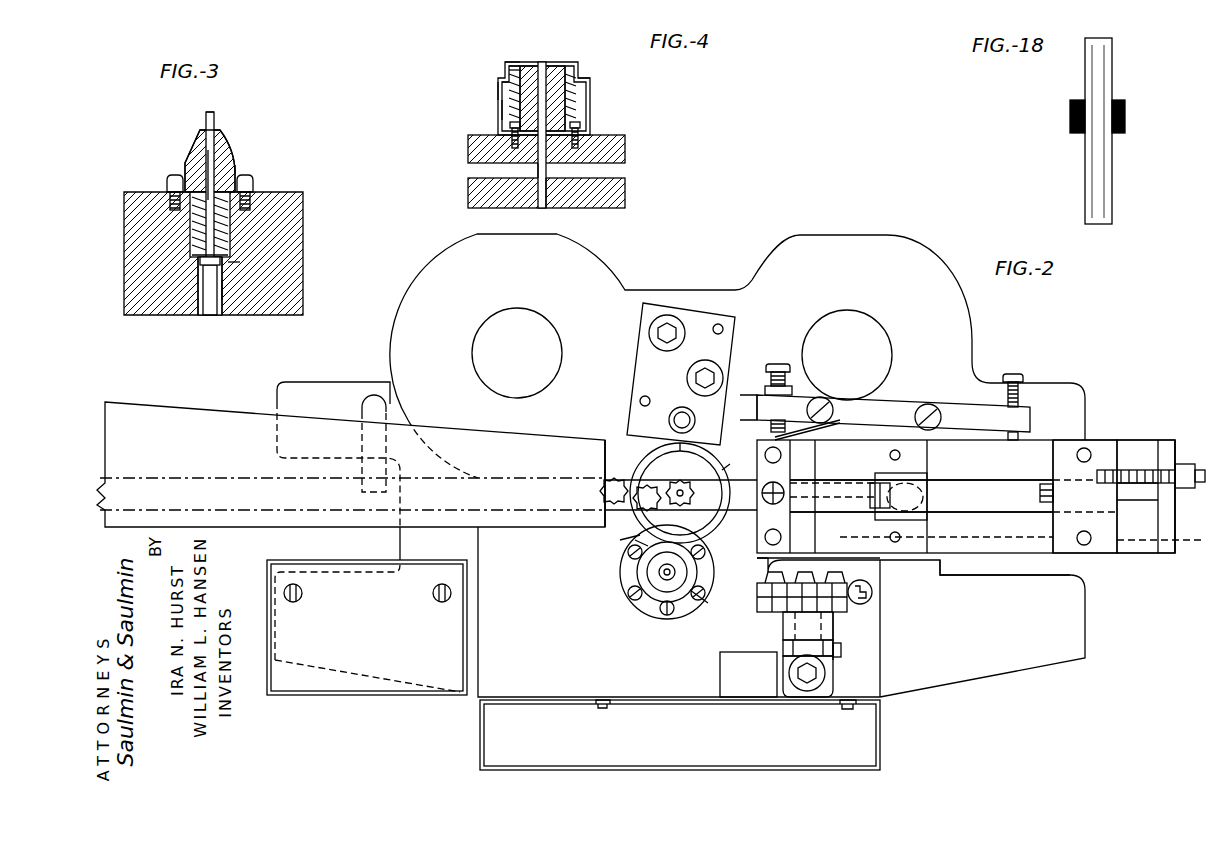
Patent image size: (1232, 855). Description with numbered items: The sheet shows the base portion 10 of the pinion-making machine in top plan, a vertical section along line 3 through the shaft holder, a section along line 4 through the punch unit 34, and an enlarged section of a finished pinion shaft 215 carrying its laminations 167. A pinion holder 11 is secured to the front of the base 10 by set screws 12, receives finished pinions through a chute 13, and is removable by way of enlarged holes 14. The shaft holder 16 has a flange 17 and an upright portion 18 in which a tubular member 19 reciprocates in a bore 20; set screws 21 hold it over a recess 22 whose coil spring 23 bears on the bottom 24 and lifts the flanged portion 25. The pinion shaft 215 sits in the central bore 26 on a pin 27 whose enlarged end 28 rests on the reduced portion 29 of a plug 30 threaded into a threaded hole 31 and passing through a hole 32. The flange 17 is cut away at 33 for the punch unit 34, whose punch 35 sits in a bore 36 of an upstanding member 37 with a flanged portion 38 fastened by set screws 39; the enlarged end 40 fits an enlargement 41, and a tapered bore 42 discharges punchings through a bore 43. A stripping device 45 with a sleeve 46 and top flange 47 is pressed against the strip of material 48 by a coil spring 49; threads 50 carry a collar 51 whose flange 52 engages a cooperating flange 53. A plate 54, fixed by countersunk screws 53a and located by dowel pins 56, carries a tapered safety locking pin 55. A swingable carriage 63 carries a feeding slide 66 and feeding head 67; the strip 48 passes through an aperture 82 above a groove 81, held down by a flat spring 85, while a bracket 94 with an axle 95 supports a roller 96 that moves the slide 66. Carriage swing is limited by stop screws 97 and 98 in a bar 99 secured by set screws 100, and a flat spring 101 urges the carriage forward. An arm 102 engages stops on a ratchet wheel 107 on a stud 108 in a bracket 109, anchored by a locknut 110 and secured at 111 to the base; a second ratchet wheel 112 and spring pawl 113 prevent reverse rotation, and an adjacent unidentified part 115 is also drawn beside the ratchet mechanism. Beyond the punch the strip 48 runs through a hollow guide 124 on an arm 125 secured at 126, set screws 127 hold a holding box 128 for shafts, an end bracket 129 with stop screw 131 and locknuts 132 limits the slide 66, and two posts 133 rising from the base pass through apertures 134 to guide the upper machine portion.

In FIG. 2, the section line 3 is at (622, 538).
In FIG. 2, the section line 4 is at (622, 452).
In FIG. 3, the base portion 10 is at (300, 214).
In FIG. 4, the base portion 10 is at (622, 190).
In FIG. 2, the base portion 10 is at (490, 680).
In FIG. 2, the pinion holder 11 is at (878, 730).
In FIG. 2, the set screws 12 is at (603, 709).
In FIG. 2, the chute 13 is at (722, 669).
In FIG. 2, the enlarged holes 14 is at (733, 562).
In FIG. 3, the shaft holder 16 is at (240, 150).
In FIG. 2, the shaft holder 16 is at (745, 478).
In FIG. 3, the flange 17 is at (253, 188).
In FIG. 2, the flange 17 is at (642, 608).
In FIG. 3, the upright portion 18 is at (194, 138).
In FIG. 2, the upright portion 18 is at (684, 600).
In FIG. 3, the tubular member 19 is at (214, 118).
In FIG. 2, the tubular member 19 is at (668, 572).
In FIG. 3, the bore 20 is at (232, 140).
In FIG. 2, the bore 20 is at (660, 576).
In FIG. 3, the set screws 21 is at (175, 176).
In FIG. 3, the recess 22 is at (200, 250).
In FIG. 3, the coil spring 23 is at (200, 255).
In FIG. 3, the bottom of recess 24 is at (192, 262).
In FIG. 3, the flanged portion 25 is at (236, 172).
In FIG. 3, the central bore 26 is at (207, 113).
In FIG. 3, the pin 27 is at (205, 165).
In FIG. 3, the enlarged lower end 28 is at (232, 262).
In FIG. 3, the reduced portion 29 is at (222, 268).
In FIG. 3, the plug 30 is at (212, 266).
In FIG. 3, the threaded hole 31 is at (216, 272).
In FIG. 3, the hole 32 is at (228, 270).
In FIG. 2, the cut-away portion 33 is at (652, 541).
In FIG. 4, the punch unit 34 is at (594, 101).
In FIG. 2, the punch unit 34 is at (656, 464).
In FIG. 4, the punch 35 is at (548, 70).
In FIG. 2, the punch 35 is at (680, 488).
In FIG. 4, the bore 36 is at (562, 76).
In FIG. 4, the upstanding member 37 is at (582, 80).
In FIG. 4, the flanged portion 38 is at (582, 130).
In FIG. 4, the set screws 39 is at (472, 150).
In FIG. 4, the enlarged lower end 40 is at (543, 135).
In FIG. 4, the bore enlargement 41 is at (519, 172).
In FIG. 4, the tapered bore 42 is at (532, 68).
In FIG. 2, the tapered bore 42 is at (686, 490).
In FIG. 4, the bore 43 is at (544, 205).
In FIG. 4, the stripping device 45 is at (510, 64).
In FIG. 4, the sleeve 46 is at (509, 74).
In FIG. 4, the top flanged portion 47 is at (514, 70).
In FIG. 2, the strip of material 48 is at (740, 475).
In FIG. 4, the coil spring 49 is at (512, 104).
In FIG. 4, the threaded portion 50 is at (508, 130).
In FIG. 4, the collar 51 is at (500, 110).
In FIG. 4, the flange 52 is at (503, 84).
In FIG. 4, the flange 53 is at (497, 88).
In FIG. 2, the countersunk screws 53a is at (672, 330).
In FIG. 2, the plate 54 is at (640, 362).
In FIG. 2, the tapered safety locking pin 55 is at (669, 421).
In FIG. 2, the dowel pins 56 is at (722, 326).
In FIG. 2, the swingable carriage 63 is at (1145, 550).
In FIG. 2, the feeding slide 66 is at (966, 496).
In FIG. 2, the feeding head 67 is at (1100, 447).
In FIG. 2, the groove 81 is at (1022, 490).
In FIG. 2, the aperture 82 is at (743, 412).
In FIG. 2, the flat spring 85 is at (968, 493).
In FIG. 2, the bracket 94 is at (905, 483).
In FIG. 2, the axle 95 is at (880, 481).
In FIG. 2, the roller 96 is at (870, 492).
In FIG. 2, the stop screw 97 is at (792, 382).
In FIG. 2, the stop screw 98 is at (1016, 382).
In FIG. 2, the bar 99 is at (903, 408).
In FIG. 2, the set screws 100 is at (826, 404).
In FIG. 2, the flat spring 101 is at (820, 432).
In FIG. 2, the arm 102 is at (953, 563).
In FIG. 2, the ratchet wheel 107 is at (760, 592).
In FIG. 2, the stud 108 is at (818, 620).
In FIG. 2, the bracket 109 is at (782, 628).
In FIG. 2, the locknut 110 is at (834, 646).
In FIG. 2, the securing point 111 is at (822, 674).
In FIG. 2, the second ratchet wheel 112 is at (775, 608).
In FIG. 2, the spring pawl 113 is at (835, 618).
In FIG. 2, the knob 115 is at (873, 590).
In FIG. 2, the hollow guide 124 is at (259, 527).
In FIG. 2, the arm 125 is at (364, 412).
In FIG. 2, the securing point 126 is at (374, 394).
In FIG. 2, the set screws 127 is at (298, 600).
In FIG. 2, the holding box 128 is at (364, 694).
In FIG. 2, the end bracket 129 is at (1170, 440).
In FIG. 2, the stop screw 131 is at (1138, 468).
In FIG. 2, the locknuts 132 is at (1184, 466).
In FIG. 2, the posts 133 is at (500, 313).
In FIG. 2, the apertures 134 is at (705, 455).
In FIG. 18, the pinion laminations 167 is at (1118, 133).
In FIG. 18, the pinion shaft 215 is at (1113, 70).